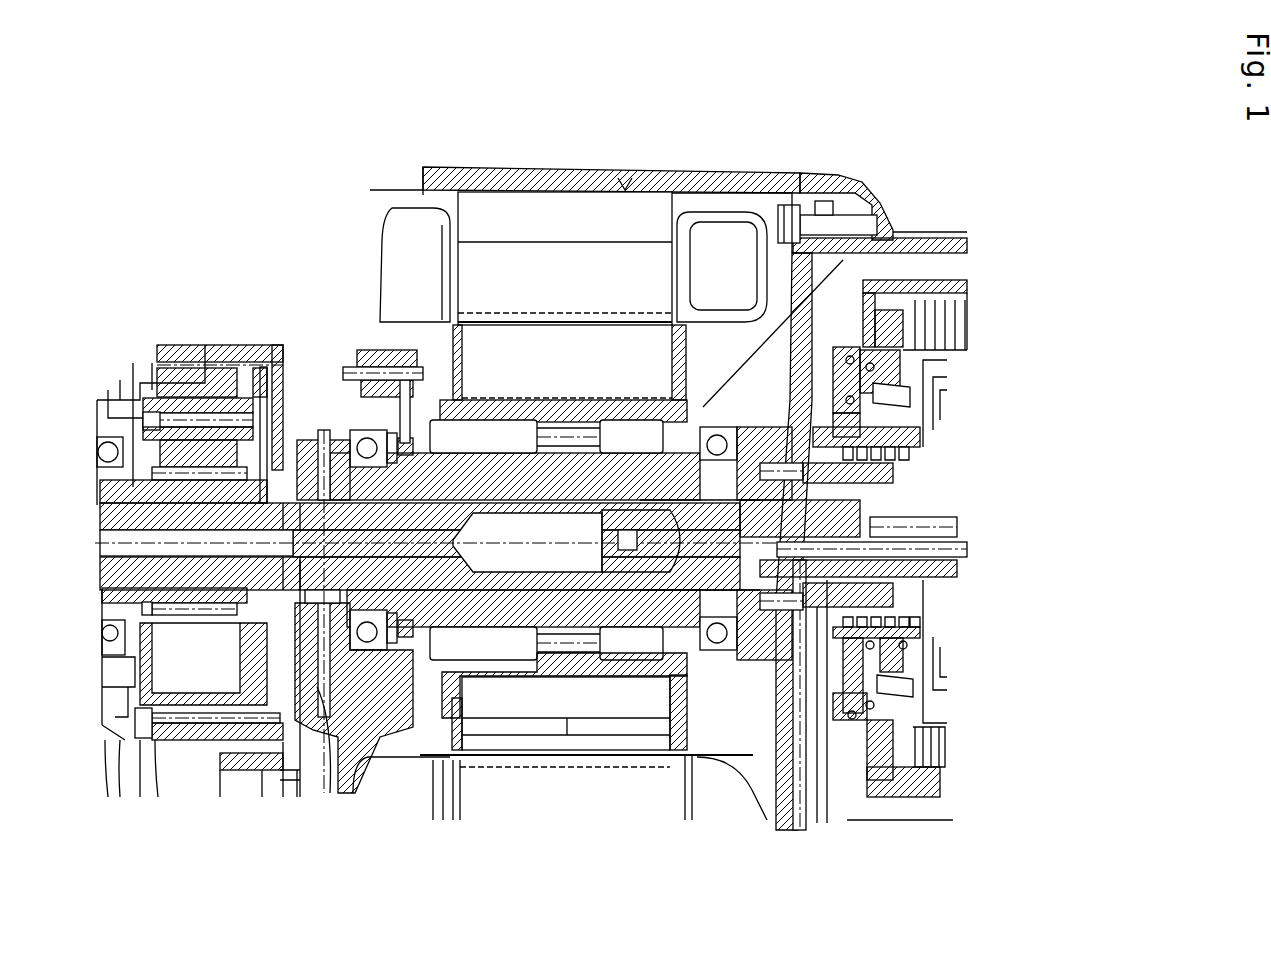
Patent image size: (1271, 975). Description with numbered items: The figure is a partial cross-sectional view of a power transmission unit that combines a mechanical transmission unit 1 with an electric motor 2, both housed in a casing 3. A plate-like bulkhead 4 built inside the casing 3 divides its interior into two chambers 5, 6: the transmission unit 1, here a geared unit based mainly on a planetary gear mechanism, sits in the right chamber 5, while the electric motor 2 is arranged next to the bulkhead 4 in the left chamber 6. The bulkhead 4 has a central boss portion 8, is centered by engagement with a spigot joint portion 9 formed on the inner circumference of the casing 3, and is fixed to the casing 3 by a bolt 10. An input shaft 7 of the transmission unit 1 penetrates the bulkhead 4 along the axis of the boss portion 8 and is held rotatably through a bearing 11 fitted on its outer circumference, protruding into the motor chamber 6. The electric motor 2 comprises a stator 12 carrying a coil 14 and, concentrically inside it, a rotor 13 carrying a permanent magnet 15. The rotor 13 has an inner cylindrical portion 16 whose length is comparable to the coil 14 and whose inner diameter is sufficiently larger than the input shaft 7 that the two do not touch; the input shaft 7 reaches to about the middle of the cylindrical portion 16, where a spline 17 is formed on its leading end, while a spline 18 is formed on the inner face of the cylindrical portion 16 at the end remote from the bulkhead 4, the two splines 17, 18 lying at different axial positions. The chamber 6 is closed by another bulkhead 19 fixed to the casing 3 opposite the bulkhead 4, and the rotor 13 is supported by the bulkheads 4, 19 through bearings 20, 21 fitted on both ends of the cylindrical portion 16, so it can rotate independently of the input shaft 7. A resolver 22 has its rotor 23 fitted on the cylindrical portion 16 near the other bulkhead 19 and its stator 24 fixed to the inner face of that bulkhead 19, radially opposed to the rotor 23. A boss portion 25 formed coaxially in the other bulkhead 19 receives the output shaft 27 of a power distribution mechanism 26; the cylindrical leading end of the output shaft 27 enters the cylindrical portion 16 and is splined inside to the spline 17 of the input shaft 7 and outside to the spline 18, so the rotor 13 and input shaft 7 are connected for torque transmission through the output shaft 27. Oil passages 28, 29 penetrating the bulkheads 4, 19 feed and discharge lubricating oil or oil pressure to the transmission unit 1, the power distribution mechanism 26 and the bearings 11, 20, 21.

The mechanical transmission unit 1 is at (988, 287).
The electric motor 2 is at (625, 188).
The casing 3 is at (800, 178).
The bulkhead 4 is at (930, 275).
The chamber 5 is at (932, 265).
The chamber 6 is at (725, 200).
The input shaft 7 is at (717, 535).
The boss portion 8 is at (752, 400).
The spigot joint portion 9 is at (835, 212).
The bolt 10 is at (880, 225).
The bearing 11 is at (782, 500).
The stator 12 is at (487, 217).
The rotor 13 is at (527, 345).
The coil 14 is at (407, 250).
The permanent magnet 15 is at (592, 725).
The cylindrical portion 16 is at (610, 463).
The spline 17 is at (648, 512).
The spline 18 is at (433, 490).
The another bulkhead 19 is at (372, 348).
The bearing 20 is at (697, 663).
The bearing 21 is at (367, 673).
The resolver 22 is at (440, 657).
The rotor of resolver 23 is at (393, 443).
The stator of resolver 24 is at (363, 363).
The boss portion 25 is at (313, 452).
The power distribution mechanism 26 is at (176, 330).
The output shaft 27 is at (433, 574).
The oil passage 28 is at (793, 788).
The oil passage 29 is at (343, 685).